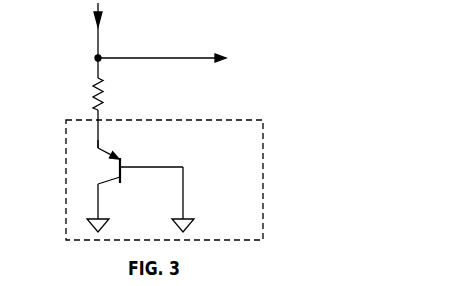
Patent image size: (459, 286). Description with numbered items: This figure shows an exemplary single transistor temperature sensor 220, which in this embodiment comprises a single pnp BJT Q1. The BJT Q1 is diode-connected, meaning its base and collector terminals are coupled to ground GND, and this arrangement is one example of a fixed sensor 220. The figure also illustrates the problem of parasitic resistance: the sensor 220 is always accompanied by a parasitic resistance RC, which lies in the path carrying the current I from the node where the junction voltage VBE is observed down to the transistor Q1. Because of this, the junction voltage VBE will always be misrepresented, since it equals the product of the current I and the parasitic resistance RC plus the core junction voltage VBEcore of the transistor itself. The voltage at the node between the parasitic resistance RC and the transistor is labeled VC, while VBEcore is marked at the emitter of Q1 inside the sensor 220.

The sensor 220 is at (245, 175).
The pnp BJT Q1 is at (126, 166).
The parasitic resistance RC is at (209, 113).
The collector voltage VC is at (78, 81).
The junction voltage VBE is at (179, 54).
The core junction voltage VBEcore is at (135, 142).
The current I is at (89, 30).
The ground GND is at (140, 201).